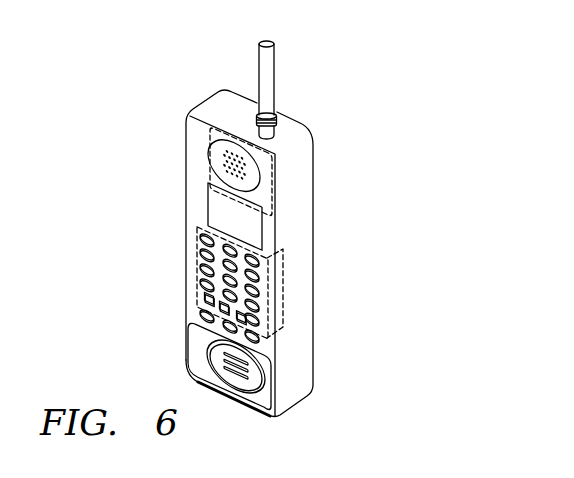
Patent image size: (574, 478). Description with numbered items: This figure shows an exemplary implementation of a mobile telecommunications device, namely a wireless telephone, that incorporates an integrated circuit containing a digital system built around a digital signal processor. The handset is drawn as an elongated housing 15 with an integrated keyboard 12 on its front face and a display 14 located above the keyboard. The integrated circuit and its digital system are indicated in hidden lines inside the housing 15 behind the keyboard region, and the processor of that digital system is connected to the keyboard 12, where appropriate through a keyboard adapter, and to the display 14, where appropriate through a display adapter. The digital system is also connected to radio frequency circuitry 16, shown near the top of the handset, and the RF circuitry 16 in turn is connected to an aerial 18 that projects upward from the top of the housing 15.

The integrated keyboard 12 is at (197, 263).
The display 14 is at (207, 212).
The housing 15 is at (312, 377).
The radio frequency (RF) circuitry 16 is at (210, 178).
The aerial 18 is at (275, 80).